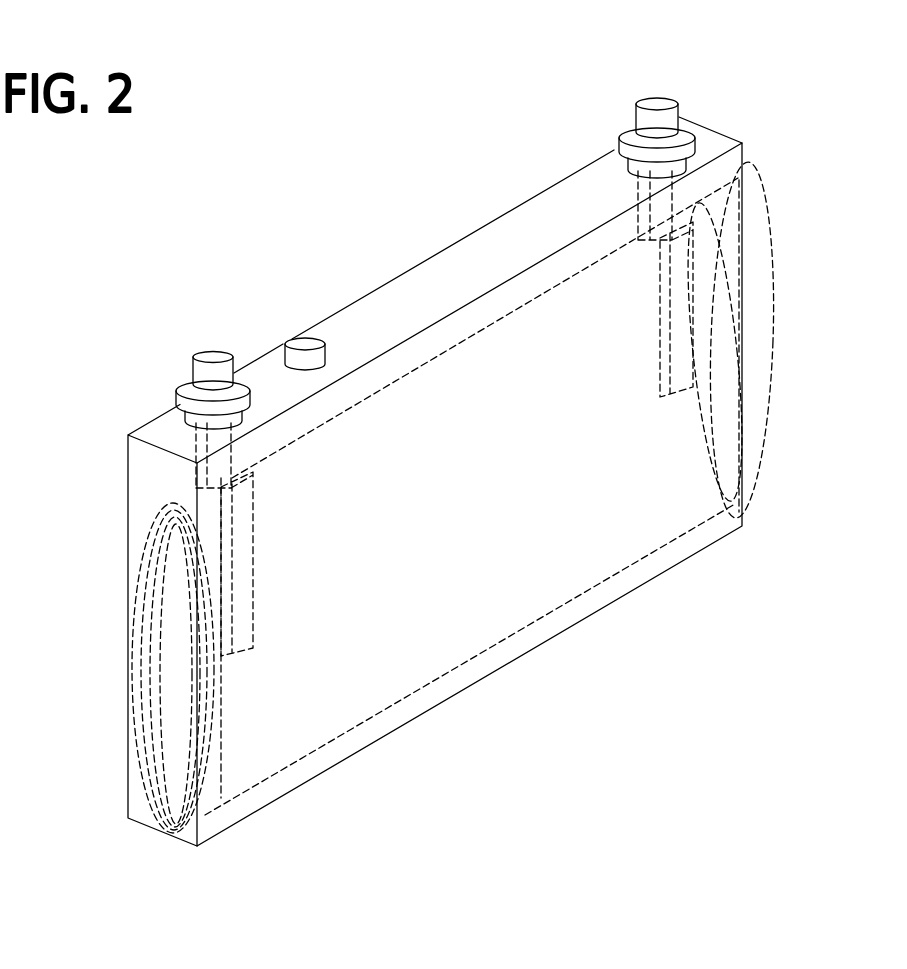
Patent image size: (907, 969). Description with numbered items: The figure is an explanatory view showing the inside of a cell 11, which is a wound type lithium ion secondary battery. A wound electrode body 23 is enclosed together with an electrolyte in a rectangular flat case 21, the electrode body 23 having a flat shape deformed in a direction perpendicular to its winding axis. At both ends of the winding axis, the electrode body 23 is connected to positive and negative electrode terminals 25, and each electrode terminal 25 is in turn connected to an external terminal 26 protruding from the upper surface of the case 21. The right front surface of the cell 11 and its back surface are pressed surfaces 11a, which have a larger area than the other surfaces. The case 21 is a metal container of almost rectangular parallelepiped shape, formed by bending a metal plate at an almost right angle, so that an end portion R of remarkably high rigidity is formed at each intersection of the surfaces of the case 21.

The cell 11 is at (435, 481).
The pressed surface 11a is at (308, 705).
The case 21 is at (715, 200).
The electrode body 23 is at (747, 436).
The electrode terminal 25 is at (242, 557).
The external terminal 26 is at (213, 357).
The end portion R is at (484, 491).